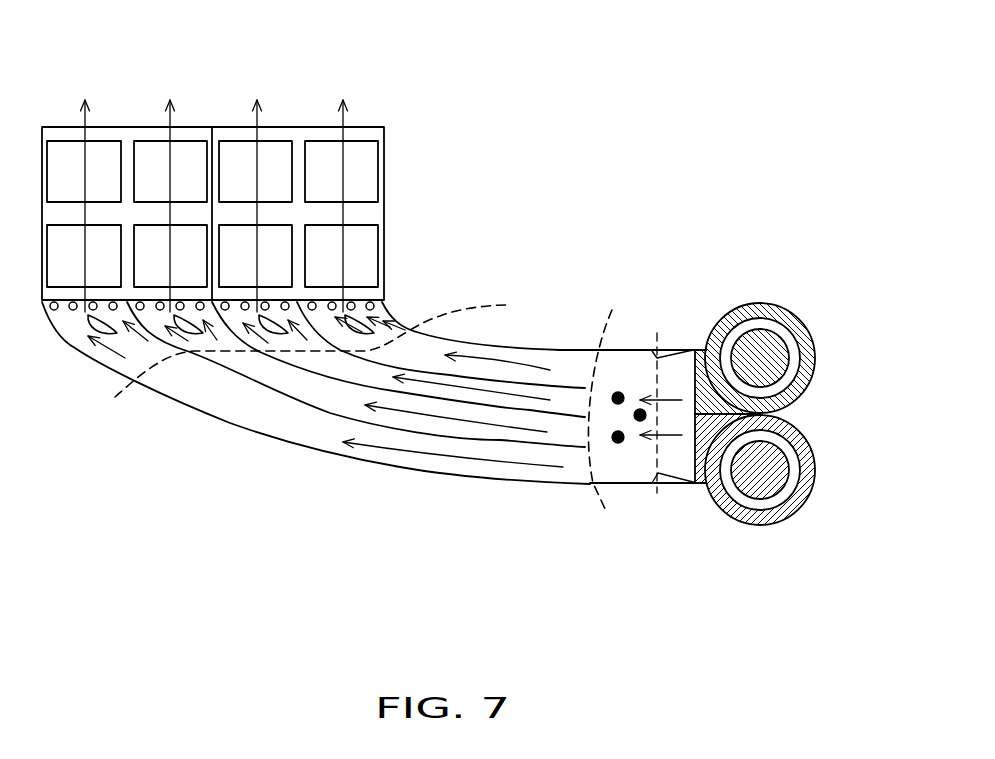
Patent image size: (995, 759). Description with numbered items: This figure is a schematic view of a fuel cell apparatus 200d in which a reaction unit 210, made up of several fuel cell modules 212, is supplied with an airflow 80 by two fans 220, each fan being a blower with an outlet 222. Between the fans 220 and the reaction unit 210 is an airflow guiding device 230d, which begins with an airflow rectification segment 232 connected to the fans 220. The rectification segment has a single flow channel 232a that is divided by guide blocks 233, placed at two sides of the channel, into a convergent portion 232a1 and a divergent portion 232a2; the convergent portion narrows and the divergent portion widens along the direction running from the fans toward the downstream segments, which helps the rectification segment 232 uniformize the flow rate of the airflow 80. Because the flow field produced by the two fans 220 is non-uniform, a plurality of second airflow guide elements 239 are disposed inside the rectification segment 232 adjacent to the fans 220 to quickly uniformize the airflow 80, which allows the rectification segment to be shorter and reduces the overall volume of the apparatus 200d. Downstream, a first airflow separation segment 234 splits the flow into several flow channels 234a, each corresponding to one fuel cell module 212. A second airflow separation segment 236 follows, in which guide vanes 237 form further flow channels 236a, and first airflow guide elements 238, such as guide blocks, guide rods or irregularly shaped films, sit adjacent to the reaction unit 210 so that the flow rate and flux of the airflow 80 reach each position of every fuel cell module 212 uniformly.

The fuel cell apparatus 200d is at (855, 622).
The reaction unit 210 is at (352, 52).
The fuel cell module 212 is at (125, 97).
The fan 220 is at (812, 358).
The outlet 222 is at (692, 459).
The airflow guiding device 230d is at (520, 574).
The airflow rectification segment 232 is at (633, 495).
The flow channel 232a is at (832, 247).
The convergent portion 232a1 is at (695, 350).
The divergent portion 232a2 is at (645, 374).
The guide block 233 is at (661, 485).
The first airflow separation segment 234 is at (400, 483).
The flow channel 234a is at (567, 372).
The second airflow separation segment 236 is at (102, 380).
The flow channel 236a is at (390, 350).
The guide vane 237 is at (88, 316).
The first airflow guide element 238 is at (51, 311).
The second airflow guide element 239 is at (618, 391).
The airflow 80 is at (643, 372).